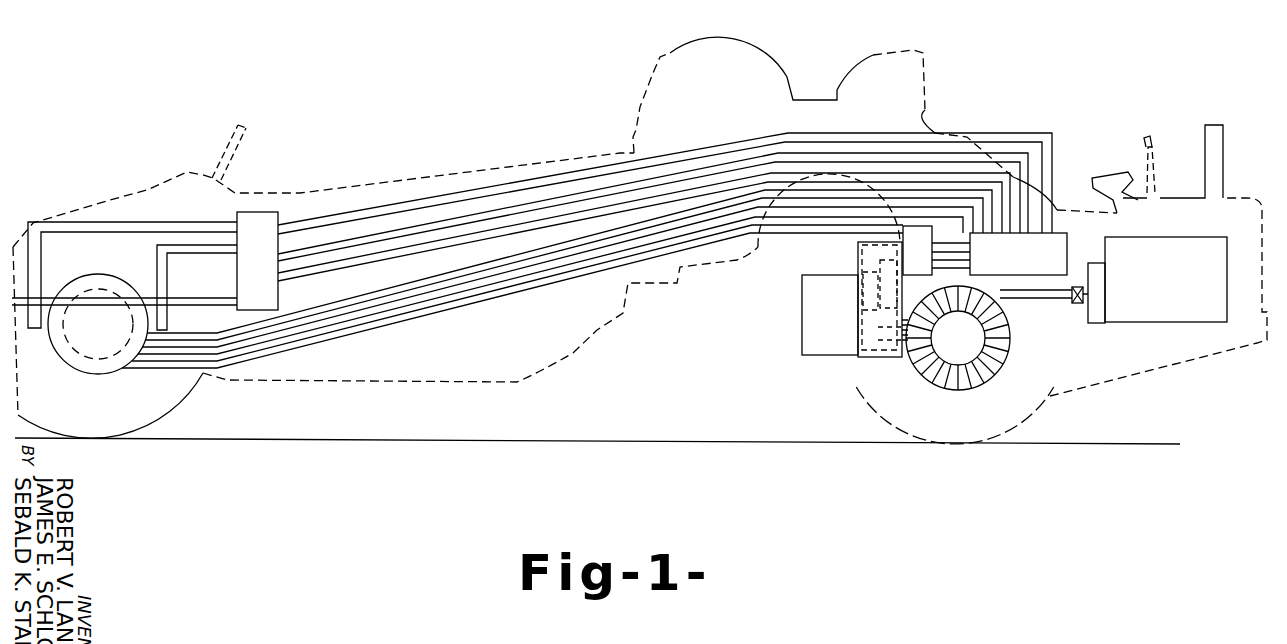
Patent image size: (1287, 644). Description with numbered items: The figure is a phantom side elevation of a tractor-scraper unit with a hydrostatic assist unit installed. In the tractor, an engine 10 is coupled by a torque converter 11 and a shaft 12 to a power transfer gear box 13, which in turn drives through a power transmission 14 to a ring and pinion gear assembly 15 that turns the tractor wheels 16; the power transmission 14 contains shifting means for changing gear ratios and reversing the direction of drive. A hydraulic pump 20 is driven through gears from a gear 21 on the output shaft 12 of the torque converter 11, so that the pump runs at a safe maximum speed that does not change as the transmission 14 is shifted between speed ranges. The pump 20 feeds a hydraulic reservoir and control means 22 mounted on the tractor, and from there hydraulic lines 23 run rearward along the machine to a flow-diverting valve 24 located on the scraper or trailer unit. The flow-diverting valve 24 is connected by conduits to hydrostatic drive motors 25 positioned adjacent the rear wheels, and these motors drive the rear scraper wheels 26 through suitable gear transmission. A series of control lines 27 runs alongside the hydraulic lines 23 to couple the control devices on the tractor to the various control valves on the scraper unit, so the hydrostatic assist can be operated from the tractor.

The engine 10 is at (1178, 288).
The torque converter 11 is at (1097, 313).
The shaft 12 is at (1012, 296).
The power transfer gear box 13 is at (883, 348).
The power transmission 14 is at (845, 338).
The ring and pinion gear assembly 15 is at (907, 353).
The tractor wheels 16 is at (1000, 423).
The hydraulic pump 20 is at (912, 248).
The gear 21 is at (882, 281).
The hydraulic reservoir and control means 22 is at (1043, 266).
The hydraulic lines 23 is at (463, 217).
The flow-diverting valve 24 is at (258, 222).
The hydrostatic drive motors 25 is at (125, 337).
The rear scraper wheels 26 is at (125, 411).
The control lines 27 is at (362, 327).